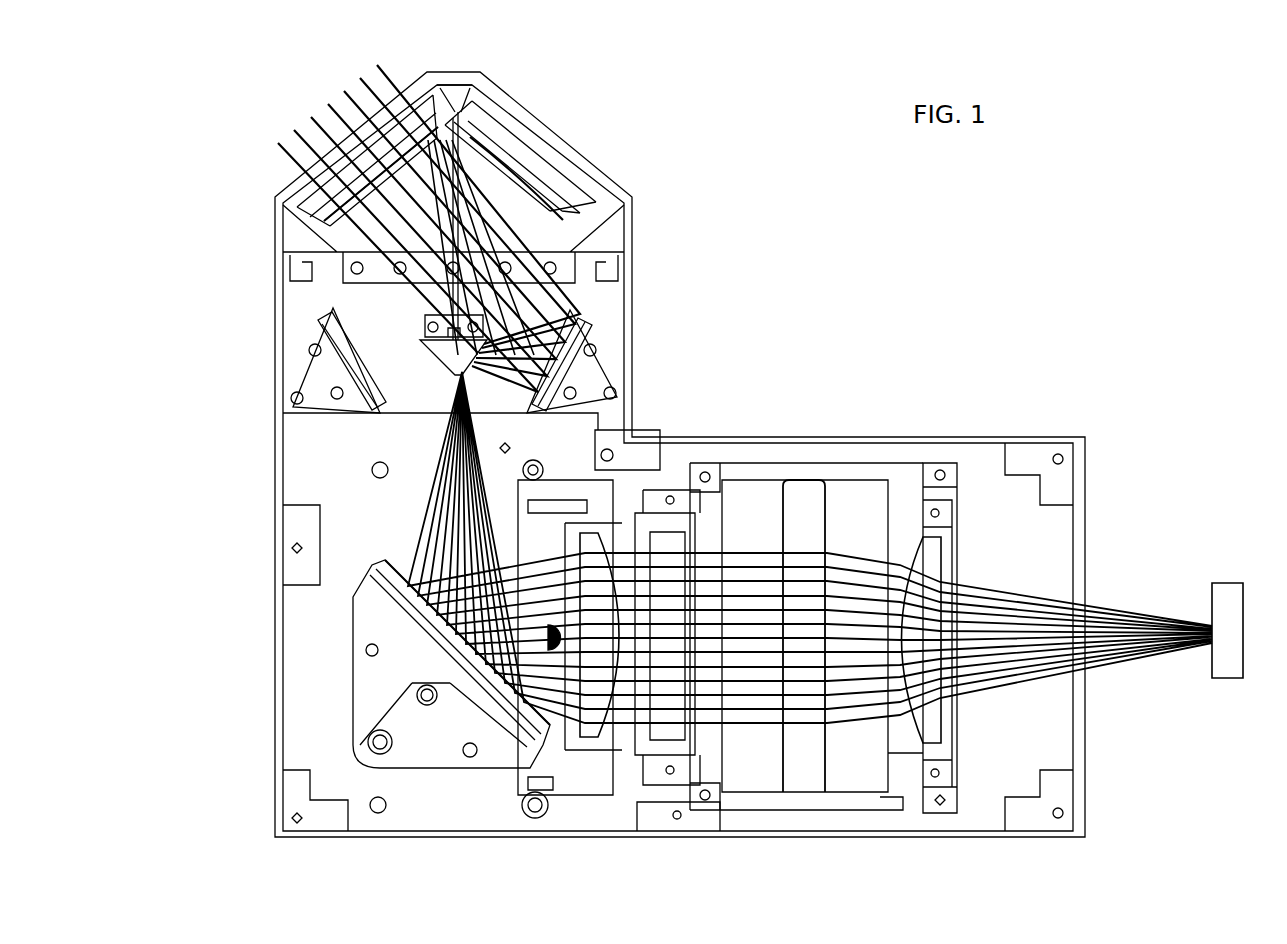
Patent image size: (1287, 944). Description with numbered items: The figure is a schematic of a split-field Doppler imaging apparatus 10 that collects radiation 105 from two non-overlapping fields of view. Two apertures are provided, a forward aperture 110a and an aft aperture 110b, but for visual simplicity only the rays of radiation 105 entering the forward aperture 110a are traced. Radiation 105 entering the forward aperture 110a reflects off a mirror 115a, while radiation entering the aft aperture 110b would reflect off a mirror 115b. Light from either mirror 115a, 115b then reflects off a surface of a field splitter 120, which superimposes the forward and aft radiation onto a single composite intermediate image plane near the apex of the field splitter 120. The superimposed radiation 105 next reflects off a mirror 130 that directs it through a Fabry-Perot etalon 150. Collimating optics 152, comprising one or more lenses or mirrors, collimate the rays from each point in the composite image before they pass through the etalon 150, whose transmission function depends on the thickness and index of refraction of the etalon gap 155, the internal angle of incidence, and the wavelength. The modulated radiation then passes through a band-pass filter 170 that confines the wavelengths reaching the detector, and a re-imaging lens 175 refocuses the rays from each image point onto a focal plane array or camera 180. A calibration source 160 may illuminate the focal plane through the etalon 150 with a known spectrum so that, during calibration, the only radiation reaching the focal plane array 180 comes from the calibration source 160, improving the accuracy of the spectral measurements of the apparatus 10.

The split-field Doppler imaging apparatus 10 is at (737, 255).
The radiation 105 is at (383, 56).
The forward aperture 110a is at (342, 147).
The aft aperture 110b is at (553, 140).
The mirror 115a is at (533, 393).
The mirror 115b is at (345, 365).
The field splitter 120 is at (452, 372).
The mirror 130 is at (355, 668).
The Fabry-Perot etalon 150 is at (747, 480).
The collimating optics 152 is at (607, 550).
The etalon gap 155 is at (805, 480).
The calibration source 160 is at (547, 637).
The band-pass filter 170 is at (895, 537).
The re-imaging lens 175 is at (942, 722).
The focal plane array 180 is at (1215, 583).